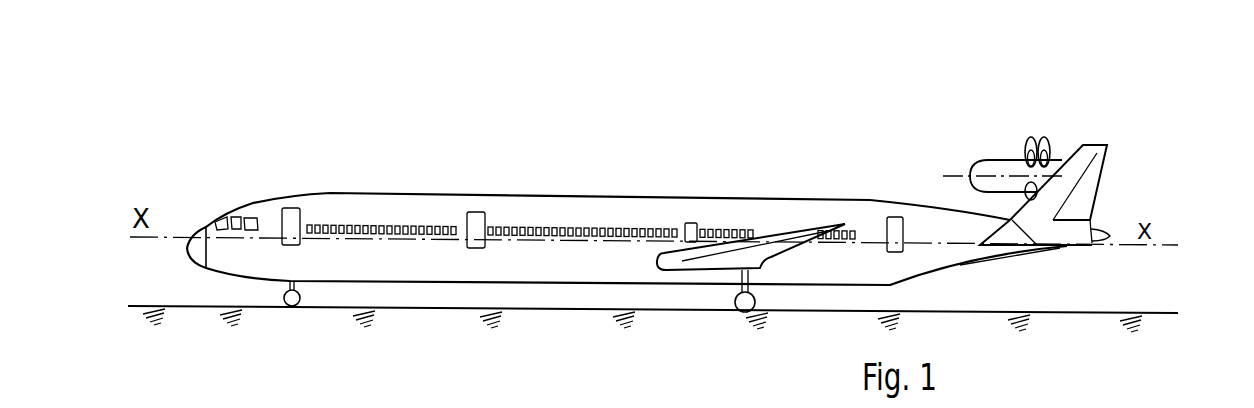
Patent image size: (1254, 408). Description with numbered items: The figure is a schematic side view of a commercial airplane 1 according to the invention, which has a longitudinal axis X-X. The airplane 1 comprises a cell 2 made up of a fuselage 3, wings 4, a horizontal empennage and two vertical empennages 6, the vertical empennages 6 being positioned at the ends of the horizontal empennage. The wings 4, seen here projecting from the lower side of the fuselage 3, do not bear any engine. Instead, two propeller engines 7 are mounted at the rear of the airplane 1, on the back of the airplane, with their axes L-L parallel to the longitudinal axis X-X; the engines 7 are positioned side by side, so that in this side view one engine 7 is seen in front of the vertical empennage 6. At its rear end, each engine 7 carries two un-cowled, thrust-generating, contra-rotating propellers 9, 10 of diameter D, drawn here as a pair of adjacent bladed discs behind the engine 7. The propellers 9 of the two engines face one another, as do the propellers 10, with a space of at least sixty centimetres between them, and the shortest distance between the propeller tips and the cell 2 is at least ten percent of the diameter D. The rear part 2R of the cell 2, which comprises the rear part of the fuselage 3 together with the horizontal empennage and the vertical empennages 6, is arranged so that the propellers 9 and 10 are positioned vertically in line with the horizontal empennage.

The commercial airplane 1 is at (490, 125).
The cell 2 is at (746, 190).
The rear part of the cell 2R is at (1126, 173).
The fuselage 3 is at (622, 195).
The wings 4 is at (784, 238).
The vertical empennage 6 is at (1083, 145).
The propeller engine 7 is at (973, 161).
The contra-rotating propeller 9 is at (1024, 145).
The contra-rotating propeller 10 is at (1042, 140).